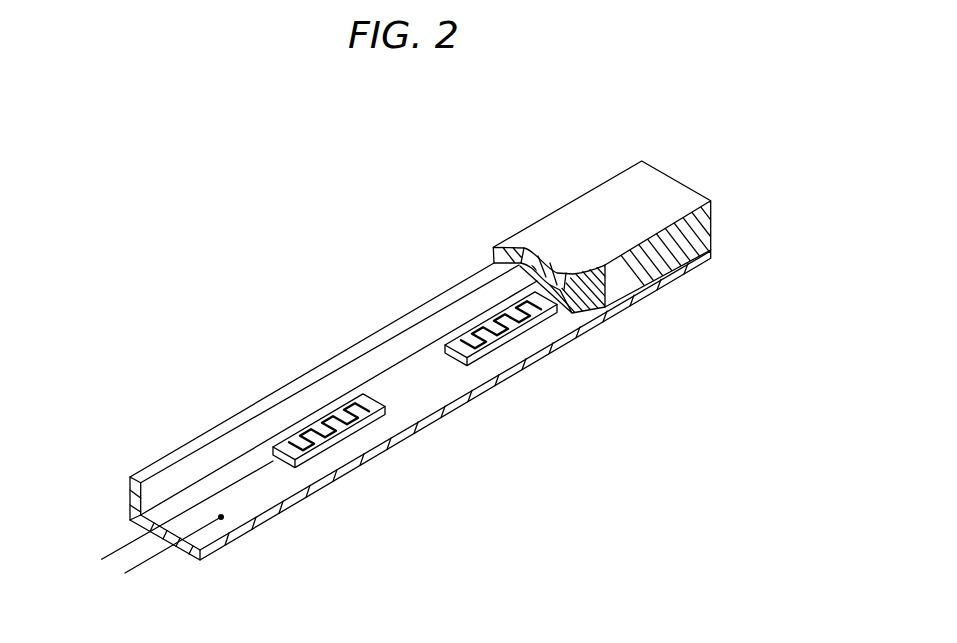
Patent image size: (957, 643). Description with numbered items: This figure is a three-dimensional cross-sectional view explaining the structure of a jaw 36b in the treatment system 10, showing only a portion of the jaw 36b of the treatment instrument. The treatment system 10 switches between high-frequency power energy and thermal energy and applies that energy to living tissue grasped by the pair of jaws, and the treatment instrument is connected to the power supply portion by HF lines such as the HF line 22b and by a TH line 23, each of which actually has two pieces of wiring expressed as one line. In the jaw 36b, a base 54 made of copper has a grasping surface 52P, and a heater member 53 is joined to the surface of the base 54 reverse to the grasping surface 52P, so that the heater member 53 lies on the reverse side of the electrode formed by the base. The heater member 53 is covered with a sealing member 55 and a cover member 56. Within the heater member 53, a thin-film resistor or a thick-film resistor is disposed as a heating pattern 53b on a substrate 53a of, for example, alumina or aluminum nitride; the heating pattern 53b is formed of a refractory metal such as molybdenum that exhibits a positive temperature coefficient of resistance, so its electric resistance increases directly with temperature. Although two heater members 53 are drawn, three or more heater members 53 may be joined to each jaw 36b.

The treatment system 10 is at (236, 234).
The HF line 22b is at (146, 561).
The TH line 23 is at (112, 552).
The jaw 36b is at (410, 305).
The grasping surface 52P is at (458, 414).
The heater member 53 is at (343, 440).
The substrate 53a is at (490, 353).
The heating pattern 53b is at (520, 333).
The base 54 is at (667, 285).
The sealing member 55 is at (565, 326).
The cover member 56 is at (712, 220).